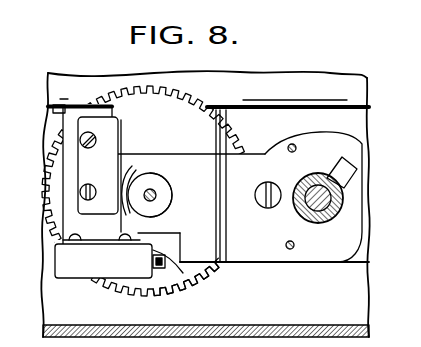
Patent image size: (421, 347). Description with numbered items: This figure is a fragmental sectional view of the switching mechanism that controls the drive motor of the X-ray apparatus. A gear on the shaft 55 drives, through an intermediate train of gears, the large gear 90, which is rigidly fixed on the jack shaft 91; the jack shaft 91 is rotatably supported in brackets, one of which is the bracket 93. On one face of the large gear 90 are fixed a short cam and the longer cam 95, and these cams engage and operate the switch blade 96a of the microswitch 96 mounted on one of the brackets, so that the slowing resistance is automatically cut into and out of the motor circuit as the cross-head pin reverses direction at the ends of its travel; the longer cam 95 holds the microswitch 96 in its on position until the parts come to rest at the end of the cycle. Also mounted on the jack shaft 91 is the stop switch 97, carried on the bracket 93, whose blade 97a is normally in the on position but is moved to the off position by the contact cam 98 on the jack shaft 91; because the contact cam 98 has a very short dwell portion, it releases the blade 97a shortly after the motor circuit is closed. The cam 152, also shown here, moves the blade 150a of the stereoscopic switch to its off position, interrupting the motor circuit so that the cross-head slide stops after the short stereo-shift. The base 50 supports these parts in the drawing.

The base plate 50 is at (272, 333).
The shaft 55 is at (297, 219).
The large gear 90 is at (241, 143).
The jack shaft 91 is at (155, 191).
The bracket 93 is at (233, 186).
The longer cam 95 is at (187, 274).
The microswitch 96 is at (82, 273).
The switch blade 96a is at (160, 268).
The stop switch 97 is at (110, 135).
The switch blade 97a is at (118, 222).
The contact cam 98 is at (130, 173).
The switch blade 150a is at (183, 198).
The cam 152 is at (141, 171).